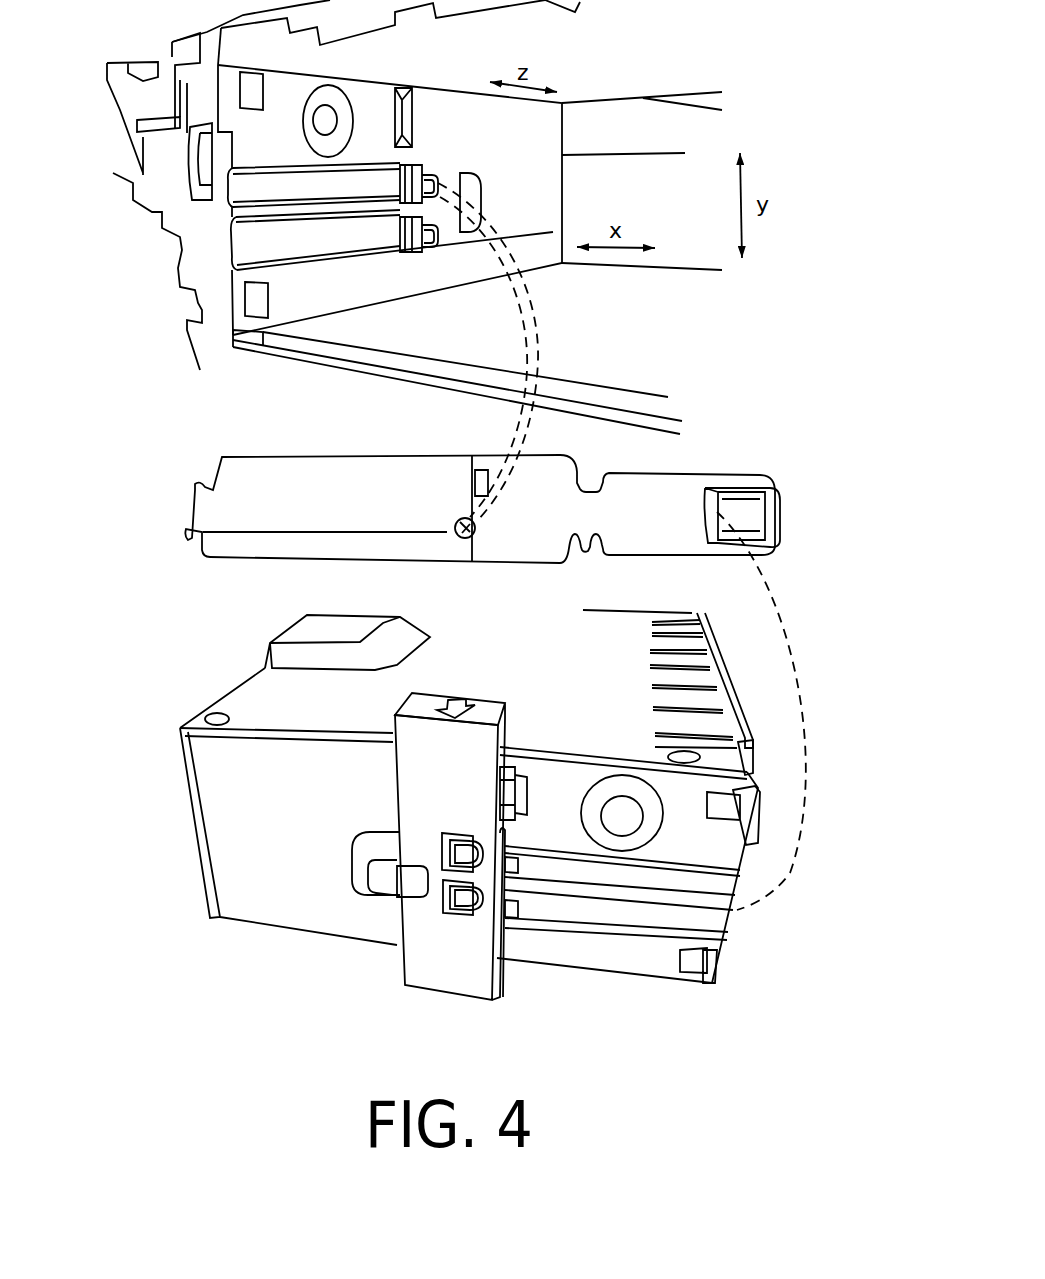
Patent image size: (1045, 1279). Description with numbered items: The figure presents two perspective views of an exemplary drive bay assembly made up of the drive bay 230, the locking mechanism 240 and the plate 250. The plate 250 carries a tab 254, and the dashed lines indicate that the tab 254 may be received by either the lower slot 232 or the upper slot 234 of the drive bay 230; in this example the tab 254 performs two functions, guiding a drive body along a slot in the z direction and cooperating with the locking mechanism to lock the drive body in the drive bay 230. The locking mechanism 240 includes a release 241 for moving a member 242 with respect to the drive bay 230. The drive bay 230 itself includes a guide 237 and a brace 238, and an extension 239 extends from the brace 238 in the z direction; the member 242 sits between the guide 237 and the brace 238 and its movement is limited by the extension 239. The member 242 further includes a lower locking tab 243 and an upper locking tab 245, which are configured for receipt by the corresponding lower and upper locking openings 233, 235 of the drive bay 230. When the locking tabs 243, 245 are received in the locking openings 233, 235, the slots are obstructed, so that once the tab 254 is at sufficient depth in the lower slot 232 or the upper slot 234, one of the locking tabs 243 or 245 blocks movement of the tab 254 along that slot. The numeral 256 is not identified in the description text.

The drive bay 230 is at (598, 82).
The lower slot 232 is at (290, 240).
The lower locking opening 233 is at (432, 238).
The upper slot 234 is at (308, 193).
The upper locking opening 235 is at (437, 180).
The guide 237 is at (405, 100).
The brace 238 is at (353, 862).
The extension 239 is at (407, 883).
The locking mechanism 240 is at (433, 832).
The release 241 is at (487, 702).
The member 242 is at (397, 777).
The lower locking tab 243 is at (415, 237).
The upper locking tab 245 is at (415, 183).
The plate 250 is at (493, 490).
The tab 254 is at (457, 520).
The retainer opening 256 is at (750, 503).